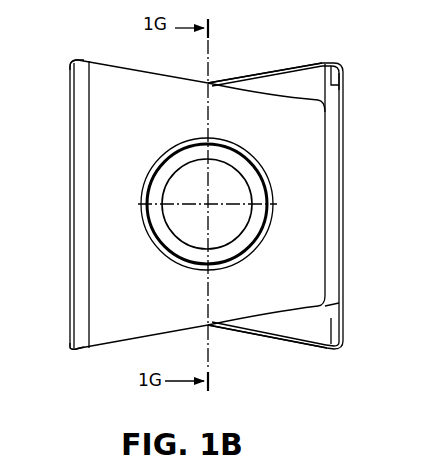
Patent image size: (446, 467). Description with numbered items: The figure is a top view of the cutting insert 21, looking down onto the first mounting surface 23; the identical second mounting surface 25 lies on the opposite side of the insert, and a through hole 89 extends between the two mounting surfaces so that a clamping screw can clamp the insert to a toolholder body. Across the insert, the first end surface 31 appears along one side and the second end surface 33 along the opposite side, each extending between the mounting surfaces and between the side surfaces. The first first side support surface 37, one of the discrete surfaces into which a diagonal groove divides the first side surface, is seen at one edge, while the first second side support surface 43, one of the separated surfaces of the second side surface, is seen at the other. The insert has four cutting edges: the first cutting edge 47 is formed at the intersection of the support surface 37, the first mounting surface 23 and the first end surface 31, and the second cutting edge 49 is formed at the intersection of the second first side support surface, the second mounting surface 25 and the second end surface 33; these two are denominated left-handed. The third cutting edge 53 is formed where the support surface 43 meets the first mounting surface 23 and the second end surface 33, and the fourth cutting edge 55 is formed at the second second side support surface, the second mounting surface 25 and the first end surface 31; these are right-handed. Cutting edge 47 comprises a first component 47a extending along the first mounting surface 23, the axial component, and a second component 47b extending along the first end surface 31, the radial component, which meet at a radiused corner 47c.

The insert 21 is at (373, 393).
The first mounting surface 23 is at (311, 255).
The second mounting surface 25 is at (300, 207).
The first end surface 31 is at (349, 160).
The second end surface 33 is at (65, 128).
The first first side support surface 37 is at (303, 86).
The first second side support surface 43 is at (296, 330).
The first cutting edge 47 is at (280, 62).
The first component 47a is at (298, 64).
The second component 47b is at (345, 69).
The radiused corner 47c is at (341, 63).
The second cutting edge 49 is at (76, 62).
The third cutting edge 53 is at (295, 348).
The fourth cutting edge 55 is at (77, 350).
The through hole 89 is at (190, 192).